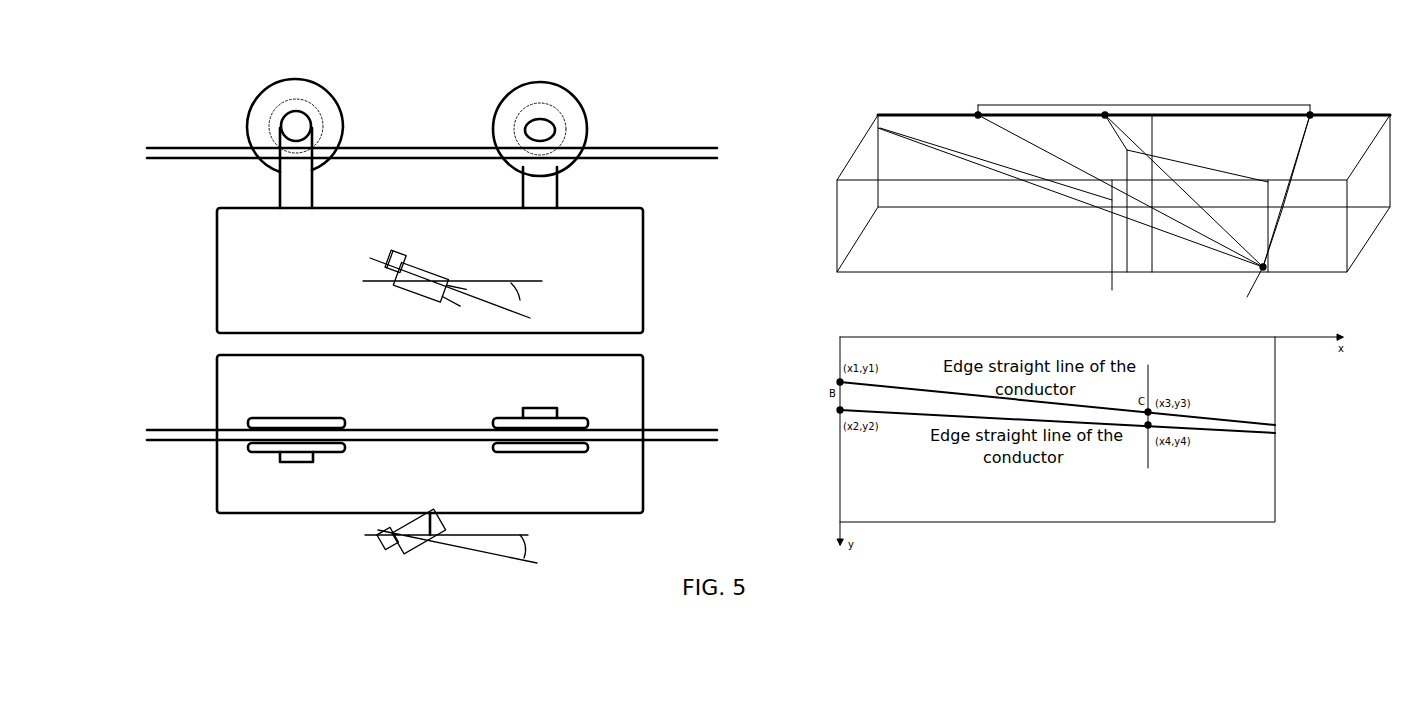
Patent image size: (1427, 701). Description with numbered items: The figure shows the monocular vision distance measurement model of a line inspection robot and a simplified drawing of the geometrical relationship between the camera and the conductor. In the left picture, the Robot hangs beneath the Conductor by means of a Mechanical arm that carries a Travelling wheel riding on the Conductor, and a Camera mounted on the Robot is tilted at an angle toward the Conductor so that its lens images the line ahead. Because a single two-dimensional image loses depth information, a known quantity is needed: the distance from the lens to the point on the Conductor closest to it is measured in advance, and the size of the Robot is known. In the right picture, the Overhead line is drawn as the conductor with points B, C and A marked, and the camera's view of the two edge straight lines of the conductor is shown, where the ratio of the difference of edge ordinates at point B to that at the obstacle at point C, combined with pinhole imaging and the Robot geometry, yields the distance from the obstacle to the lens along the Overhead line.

The conductor Conductor is at (432, 279).
The robot Robot is at (430, 360).
The mechanical arm Mechanical arm is at (307, 193).
The travelling wheel Travelling wheel is at (327, 130).
The camera Camera is at (455, 243).
The overhead line Overhead line is at (1113, 203).